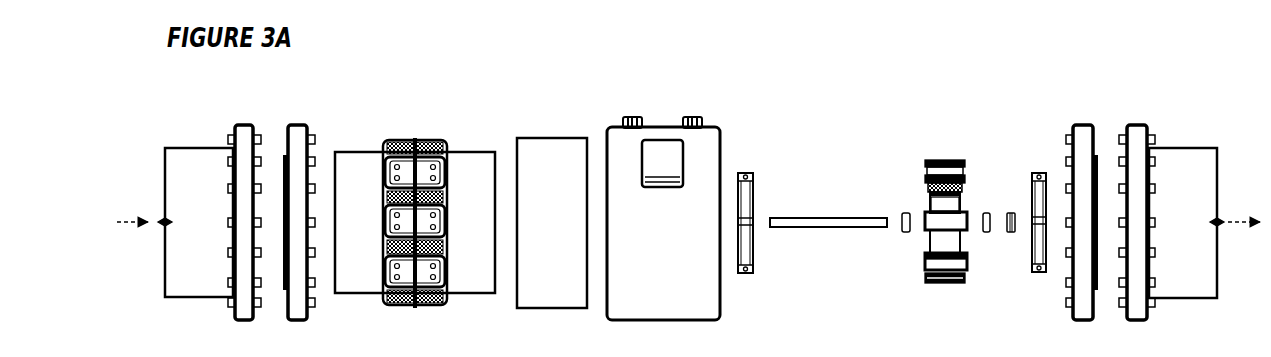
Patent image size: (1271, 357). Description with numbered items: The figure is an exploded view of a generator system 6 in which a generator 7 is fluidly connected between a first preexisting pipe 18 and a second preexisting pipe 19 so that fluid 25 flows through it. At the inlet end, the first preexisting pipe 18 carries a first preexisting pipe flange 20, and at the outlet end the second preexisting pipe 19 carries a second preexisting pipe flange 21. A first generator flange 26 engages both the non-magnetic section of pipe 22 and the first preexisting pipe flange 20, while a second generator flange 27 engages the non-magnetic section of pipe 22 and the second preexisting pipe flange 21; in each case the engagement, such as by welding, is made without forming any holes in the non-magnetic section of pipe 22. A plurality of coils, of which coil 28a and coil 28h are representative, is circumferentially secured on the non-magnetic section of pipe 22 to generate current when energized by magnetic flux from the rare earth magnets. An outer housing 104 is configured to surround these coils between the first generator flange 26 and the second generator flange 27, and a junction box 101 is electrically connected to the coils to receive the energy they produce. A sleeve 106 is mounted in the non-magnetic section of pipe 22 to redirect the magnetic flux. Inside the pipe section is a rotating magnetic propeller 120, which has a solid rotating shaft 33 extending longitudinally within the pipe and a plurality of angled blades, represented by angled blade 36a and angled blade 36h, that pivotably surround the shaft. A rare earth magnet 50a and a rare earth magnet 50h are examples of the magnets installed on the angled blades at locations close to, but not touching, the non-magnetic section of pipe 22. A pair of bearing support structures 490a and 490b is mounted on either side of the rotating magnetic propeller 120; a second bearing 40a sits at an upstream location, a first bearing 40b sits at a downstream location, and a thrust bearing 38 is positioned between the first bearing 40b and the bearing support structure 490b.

The generator system 6 is at (158, 110).
The generator 7 is at (1020, 72).
The first preexisting pipe 18 is at (201, 147).
The second preexisting pipe 19 is at (1190, 144).
The first preexisting pipe flange 20 is at (243, 120).
The second preexisting pipe flange 21 is at (1142, 120).
The non-magnetic section of pipe 22 is at (481, 144).
The fluid 25 is at (144, 211).
The first generator flange 26 is at (304, 120).
The second generator flange 27 is at (1082, 125).
The coil 28a is at (430, 133).
The coil 28h is at (388, 160).
The solid rotating shaft 33 is at (838, 212).
The angled blade 36a is at (963, 171).
The angled blade 36h is at (956, 200).
The thrust bearing 38 is at (1019, 209).
The second bearing 40a is at (905, 213).
The first bearing 40b is at (990, 207).
The rare earth magnet 50a is at (953, 155).
The rare earth magnet 50h is at (928, 176).
The junction box 101 is at (656, 140).
The outer housing 104 is at (688, 110).
The sleeve 106 is at (553, 138).
The rotating magnetic propeller 120 is at (915, 300).
The bearing support structure 490a is at (746, 220).
The bearing support structure 490b is at (1037, 222).